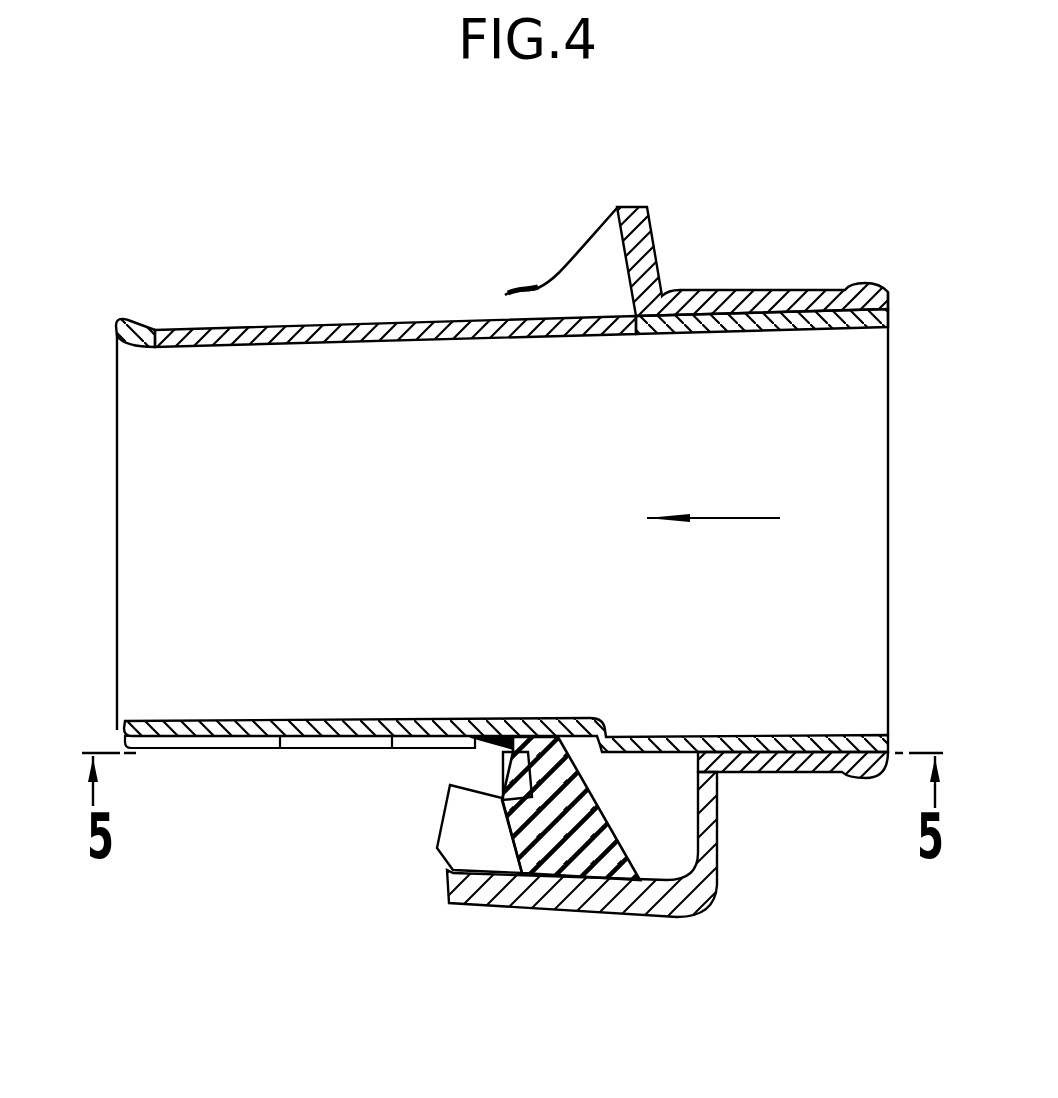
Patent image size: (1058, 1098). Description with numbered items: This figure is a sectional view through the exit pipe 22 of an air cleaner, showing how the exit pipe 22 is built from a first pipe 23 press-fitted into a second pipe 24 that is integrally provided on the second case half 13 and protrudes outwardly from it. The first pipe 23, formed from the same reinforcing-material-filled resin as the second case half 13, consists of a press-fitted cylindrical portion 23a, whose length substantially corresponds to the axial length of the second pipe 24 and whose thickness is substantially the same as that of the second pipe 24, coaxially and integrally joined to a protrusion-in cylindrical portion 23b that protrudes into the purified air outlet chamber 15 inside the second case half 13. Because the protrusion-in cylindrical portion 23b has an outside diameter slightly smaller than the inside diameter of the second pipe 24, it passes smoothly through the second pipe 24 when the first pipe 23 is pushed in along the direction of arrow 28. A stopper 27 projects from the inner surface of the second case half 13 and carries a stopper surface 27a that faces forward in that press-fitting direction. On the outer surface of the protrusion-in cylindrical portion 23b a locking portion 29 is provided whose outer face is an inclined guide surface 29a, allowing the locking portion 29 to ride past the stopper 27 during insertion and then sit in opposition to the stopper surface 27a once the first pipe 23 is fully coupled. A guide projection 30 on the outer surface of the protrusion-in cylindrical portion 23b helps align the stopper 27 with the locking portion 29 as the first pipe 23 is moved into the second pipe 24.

The second case half 13 is at (500, 901).
The purified air outlet chamber 15 is at (661, 824).
The exit pipe 22 is at (761, 290).
The first pipe 23 is at (537, 438).
The press-fitted cylindrical portion 23a is at (643, 334).
The protrusion-in cylindrical portion 23b is at (277, 340).
The second pipe 24 is at (768, 768).
The stopper 27 is at (533, 722).
The stopper surface 27a is at (468, 730).
The arrow 28 is at (738, 518).
The locking portion 29 is at (477, 752).
The inclined guide surface 29a is at (472, 747).
The guide projection 30 is at (270, 748).